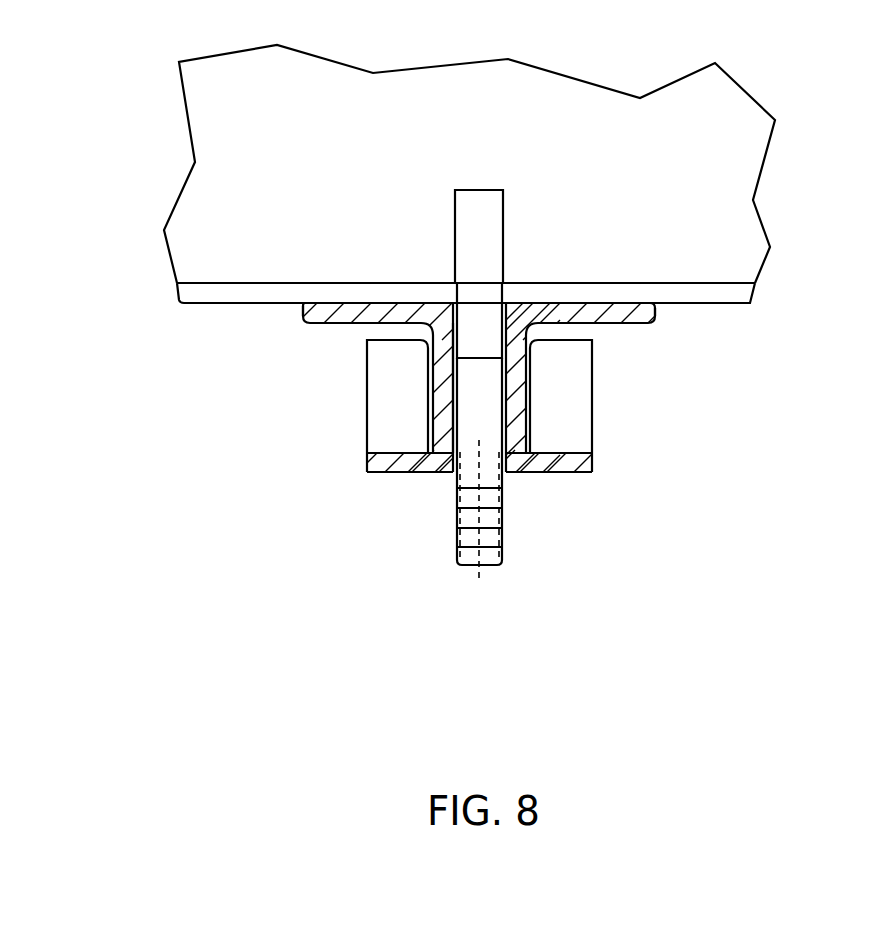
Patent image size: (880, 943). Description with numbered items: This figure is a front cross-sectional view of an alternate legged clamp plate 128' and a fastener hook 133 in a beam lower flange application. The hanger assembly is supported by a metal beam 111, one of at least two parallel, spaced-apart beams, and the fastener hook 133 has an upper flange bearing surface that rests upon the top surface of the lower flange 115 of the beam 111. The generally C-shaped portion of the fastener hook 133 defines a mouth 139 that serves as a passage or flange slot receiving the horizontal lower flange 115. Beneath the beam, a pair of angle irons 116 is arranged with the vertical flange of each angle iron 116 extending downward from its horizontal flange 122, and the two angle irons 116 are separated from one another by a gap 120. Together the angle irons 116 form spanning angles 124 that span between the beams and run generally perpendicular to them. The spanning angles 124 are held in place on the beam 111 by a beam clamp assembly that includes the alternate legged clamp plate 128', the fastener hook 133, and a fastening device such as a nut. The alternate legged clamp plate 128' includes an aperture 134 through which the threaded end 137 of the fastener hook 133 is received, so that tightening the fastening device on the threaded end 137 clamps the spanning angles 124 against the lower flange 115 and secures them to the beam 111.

The metal beam 111 is at (742, 107).
The lower flange 115 is at (178, 297).
The horizontal flange 122 is at (618, 323).
The spanning angles 124 is at (655, 310).
The gap 120 is at (452, 427).
The angle iron 116 is at (522, 363).
The alternate legged clamp plate 128' is at (517, 440).
The fastener hook 133 is at (498, 212).
The mouth 139 is at (467, 322).
The threaded end 137 is at (500, 565).
The aperture 134 is at (513, 472).